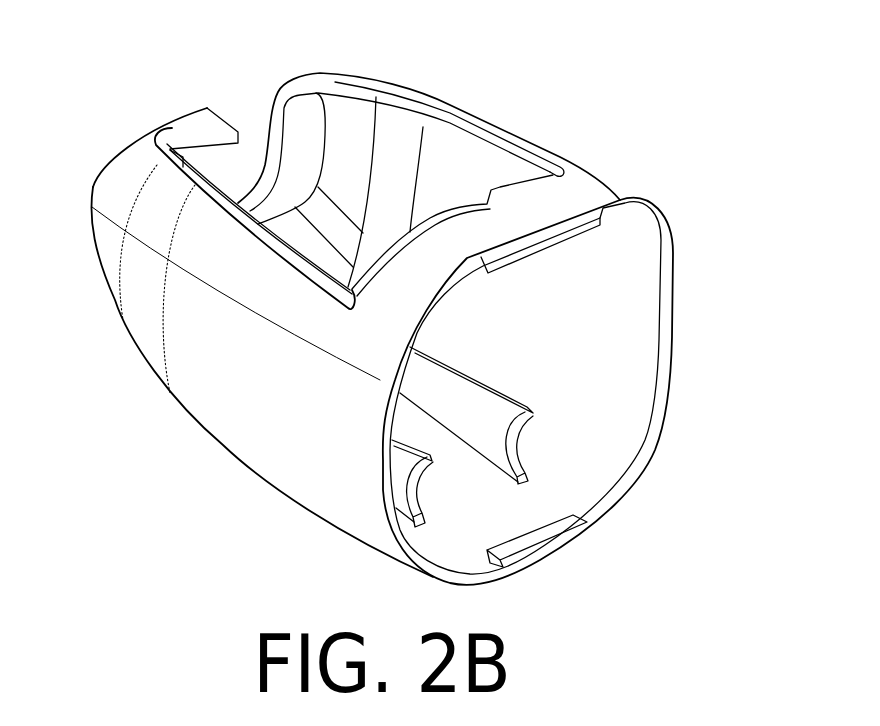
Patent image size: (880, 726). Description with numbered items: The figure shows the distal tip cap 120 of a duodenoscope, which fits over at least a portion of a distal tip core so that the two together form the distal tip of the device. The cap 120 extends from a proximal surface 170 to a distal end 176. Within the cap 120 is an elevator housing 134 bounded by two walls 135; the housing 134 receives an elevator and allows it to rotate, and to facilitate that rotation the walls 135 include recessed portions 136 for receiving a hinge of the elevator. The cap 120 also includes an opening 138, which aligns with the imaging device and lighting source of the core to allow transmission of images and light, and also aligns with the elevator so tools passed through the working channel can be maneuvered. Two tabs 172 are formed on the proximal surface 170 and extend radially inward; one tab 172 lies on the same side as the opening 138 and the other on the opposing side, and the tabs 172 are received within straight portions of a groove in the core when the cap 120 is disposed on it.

The distal tip cap 120 is at (407, 309).
The elevator housing 134 is at (488, 473).
The walls 135 is at (443, 364).
The recessed portions 136 is at (518, 440).
The opening 138 is at (403, 140).
The proximal surface 170 is at (673, 363).
The tabs 172 is at (538, 242).
The distal end 176 is at (123, 157).